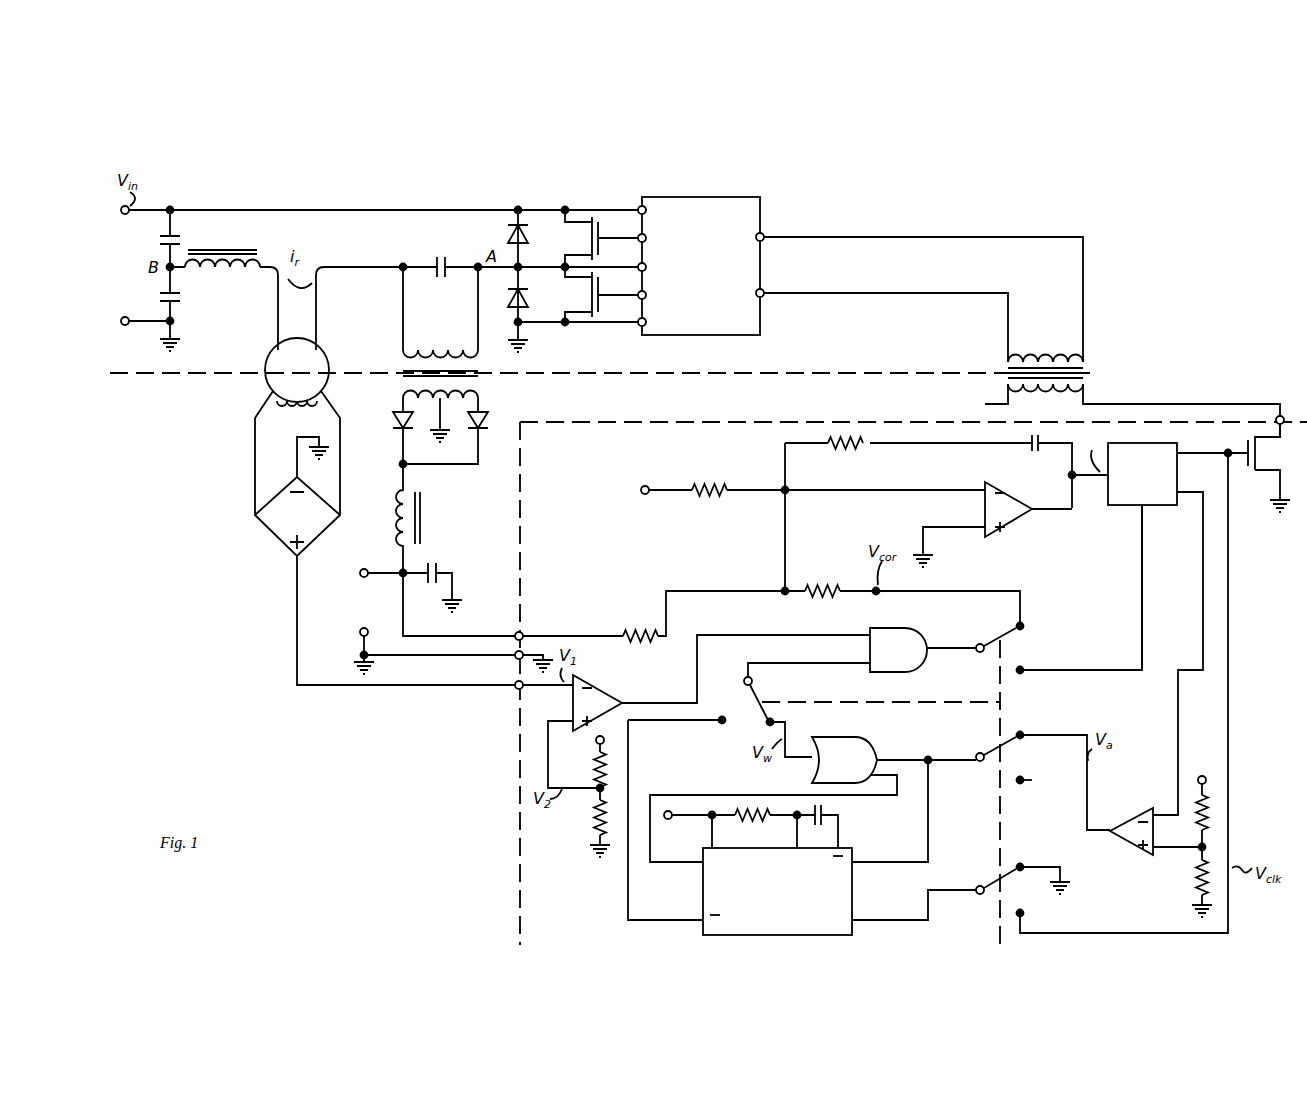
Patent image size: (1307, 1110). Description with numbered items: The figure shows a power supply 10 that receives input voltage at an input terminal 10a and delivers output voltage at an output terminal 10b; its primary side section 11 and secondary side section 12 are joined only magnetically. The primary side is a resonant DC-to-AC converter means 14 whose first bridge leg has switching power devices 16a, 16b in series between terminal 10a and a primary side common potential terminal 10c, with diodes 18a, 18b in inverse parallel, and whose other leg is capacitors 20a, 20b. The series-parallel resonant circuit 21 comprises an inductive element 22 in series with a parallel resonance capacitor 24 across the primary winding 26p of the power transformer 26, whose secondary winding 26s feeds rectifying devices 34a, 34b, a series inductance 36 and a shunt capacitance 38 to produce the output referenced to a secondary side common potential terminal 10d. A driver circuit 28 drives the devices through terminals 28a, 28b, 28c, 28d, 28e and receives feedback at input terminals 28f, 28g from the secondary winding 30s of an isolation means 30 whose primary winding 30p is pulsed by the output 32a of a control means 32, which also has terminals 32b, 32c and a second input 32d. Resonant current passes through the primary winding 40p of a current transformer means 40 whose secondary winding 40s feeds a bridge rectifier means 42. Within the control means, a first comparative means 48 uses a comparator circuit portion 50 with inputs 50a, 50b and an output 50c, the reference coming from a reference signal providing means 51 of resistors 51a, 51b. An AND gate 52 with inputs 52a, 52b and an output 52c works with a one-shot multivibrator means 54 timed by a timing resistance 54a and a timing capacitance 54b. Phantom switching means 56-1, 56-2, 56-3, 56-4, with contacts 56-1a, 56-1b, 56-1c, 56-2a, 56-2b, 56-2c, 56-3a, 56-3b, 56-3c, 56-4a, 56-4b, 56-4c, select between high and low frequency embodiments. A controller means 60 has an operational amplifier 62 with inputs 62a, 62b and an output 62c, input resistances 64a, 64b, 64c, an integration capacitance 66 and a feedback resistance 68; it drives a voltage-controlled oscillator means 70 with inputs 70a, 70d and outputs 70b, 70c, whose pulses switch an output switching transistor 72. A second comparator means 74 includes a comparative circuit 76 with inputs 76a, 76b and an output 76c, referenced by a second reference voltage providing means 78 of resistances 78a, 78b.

The power supply 10 is at (208, 627).
The input terminal 10a is at (127, 216).
The output terminal 10b is at (360, 575).
The primary side common potential terminal 10c is at (140, 332).
The secondary side common potential terminal 10d is at (360, 633).
The primary side section 11 is at (1200, 282).
The secondary side section 12 is at (710, 406).
The resonant DC-to-AC converter means 14 is at (320, 204).
The first switching power device 16a is at (588, 239).
The second switching power device 16b is at (588, 294).
The semiconductor power diode 18a is at (505, 236).
The semiconductor power diode 18b is at (511, 298).
The first series-connected capacitor 20a is at (178, 240).
The second series-connected capacitor 20b is at (178, 298).
The series-parallel resonant circuit 21 is at (350, 256).
The inductive element 22 is at (258, 252).
The parallel resonance capacitor 24 is at (444, 260).
The converter power transformer 26 is at (398, 377).
The primary winding 26p is at (440, 349).
The secondary winding 26s is at (480, 396).
The driver circuit 28 is at (763, 222).
The first terminal 28a is at (639, 208).
The first output 28b is at (640, 237).
The mid-bridge potential terminal 28c is at (640, 265).
The output terminal 28d is at (640, 293).
The primary side common potential terminal 28e is at (640, 321).
The input terminal 28f is at (764, 241).
The input terminal 28g is at (764, 297).
The isolation means 30 is at (1095, 377).
The isolated secondary winding 30s is at (1044, 356).
The primary winding 30p is at (1056, 395).
The secondary side control means 32 is at (566, 451).
The output 32a is at (1283, 416).
The control IC terminal 32b is at (516, 660).
The first input terminal 32c is at (517, 633).
The second control IC input 32d is at (516, 690).
The semiconductor rectifying device 34a is at (488, 416).
The semiconductor rectifying device 34b is at (392, 420).
The series inductance 36 is at (425, 505).
The shunt capacitance 38 is at (440, 571).
The current transformer means 40 is at (270, 361).
The single-turn primary winding 40p is at (302, 349).
The secondary winding 40s is at (320, 410).
The bridge rectifier means 42 is at (266, 536).
The first comparative means 48 is at (604, 686).
The comparator circuit portion 50 is at (580, 678).
The first inverting input 50a is at (570, 691).
The second non-inverting input 50b is at (578, 723).
The comparator output 50c is at (628, 701).
The reference signal providing means 51 is at (596, 867).
The resistor 51a is at (597, 763).
The resistor 51b is at (597, 819).
The multiple-input AND gate 52 is at (903, 629).
The first input 52a is at (866, 635).
The second gate input 52b is at (866, 667).
The AND gate output 52c is at (950, 637).
The one-shot multivibrator means 54 is at (702, 891).
The timing resistance 54a is at (769, 819).
The timing capacitance 54b is at (844, 819).
The first switching means portion 56-1 is at (742, 737).
The switch contact 56-1a is at (777, 723).
The switch contact 56-1b is at (718, 727).
The common contact 56-1c is at (744, 677).
The second phantom switching means 56-2 is at (1000, 894).
The switch terminal 56-2a is at (1021, 913).
The selectable terminal 56-2b is at (1020, 867).
The common terminal 56-2c is at (978, 889).
The third phantom switching means 56-3 is at (1022, 757).
The selectable terminal 56-3a is at (1021, 733).
The selectable terminal 56-3b is at (1021, 785).
The common terminal 56-3c is at (978, 753).
The fourth phantom switching means 56-4 is at (1026, 645).
The contact 56-4a is at (1023, 625).
The selectable terminal 56-4b is at (1026, 673).
The common terminal 56-4c is at (980, 645).
The controller means 60 is at (1030, 516).
The operational amplifier 62 is at (1016, 500).
The first inverting input 62a is at (982, 491).
The second non-inverting input 62b is at (982, 527).
The operational amplifier output 62c is at (1052, 498).
The first input resistance 64a is at (835, 589).
The second input resistance 64b is at (716, 475).
The third input resistance 64c is at (632, 632).
The integration capacitance 66 is at (1032, 449).
The feedback resistance 68 is at (846, 449).
The voltage-controlled oscillator means 70 is at (1139, 445).
The first control input 70a is at (1102, 475).
The first F output 70b is at (1186, 447).
The second R output 70c is at (1176, 495).
The second input 70d is at (1138, 513).
The output switching transistor 72 is at (1267, 455).
The second comparator means 74 is at (1129, 750).
The second comparative circuit 76 is at (1134, 817).
The first inverting input 76a is at (1158, 811).
The input 76b is at (1158, 859).
The second comparator output 76c is at (1104, 839).
The second reference voltage providing means 78 is at (1154, 902).
The resistance 78a is at (1200, 817).
The resistance 78b is at (1198, 883).